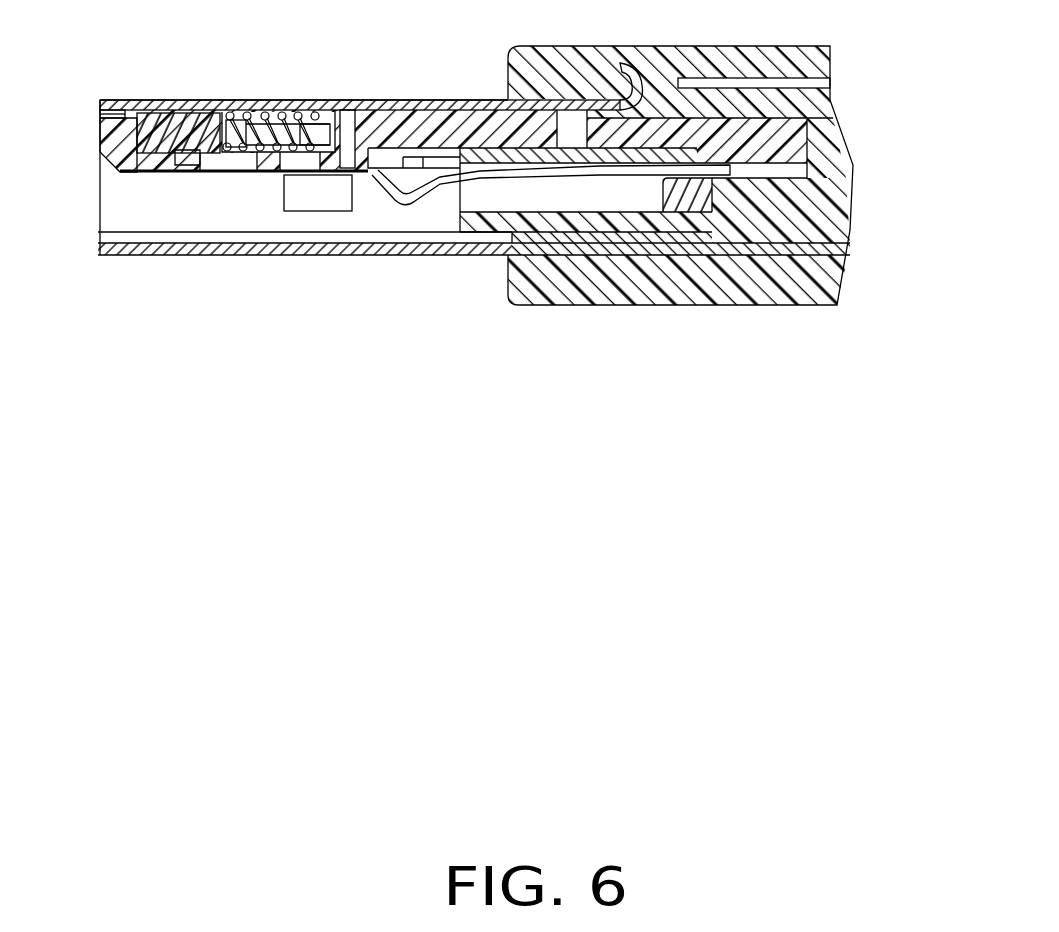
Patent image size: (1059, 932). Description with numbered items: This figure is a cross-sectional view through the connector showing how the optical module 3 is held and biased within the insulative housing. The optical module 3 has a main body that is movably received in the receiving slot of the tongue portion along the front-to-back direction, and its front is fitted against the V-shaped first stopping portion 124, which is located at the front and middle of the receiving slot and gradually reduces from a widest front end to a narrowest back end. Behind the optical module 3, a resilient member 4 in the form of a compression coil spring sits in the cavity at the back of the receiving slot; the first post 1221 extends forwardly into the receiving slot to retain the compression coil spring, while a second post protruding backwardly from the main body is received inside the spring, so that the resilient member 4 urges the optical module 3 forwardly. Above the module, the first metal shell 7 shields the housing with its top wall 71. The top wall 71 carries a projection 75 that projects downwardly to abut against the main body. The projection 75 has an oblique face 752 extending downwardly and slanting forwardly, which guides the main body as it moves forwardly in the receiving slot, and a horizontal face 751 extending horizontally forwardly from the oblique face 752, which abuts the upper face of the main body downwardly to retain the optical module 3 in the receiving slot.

The optical module 3 is at (193, 133).
The resilient member 4 is at (278, 110).
The first metal shell 7 is at (207, 108).
The top wall 71 is at (337, 110).
The projection 75 is at (130, 108).
The horizontal face 751 is at (105, 127).
The oblique face 752 is at (157, 117).
The first stopping portion 124 is at (100, 145).
The first post 1221 is at (303, 150).